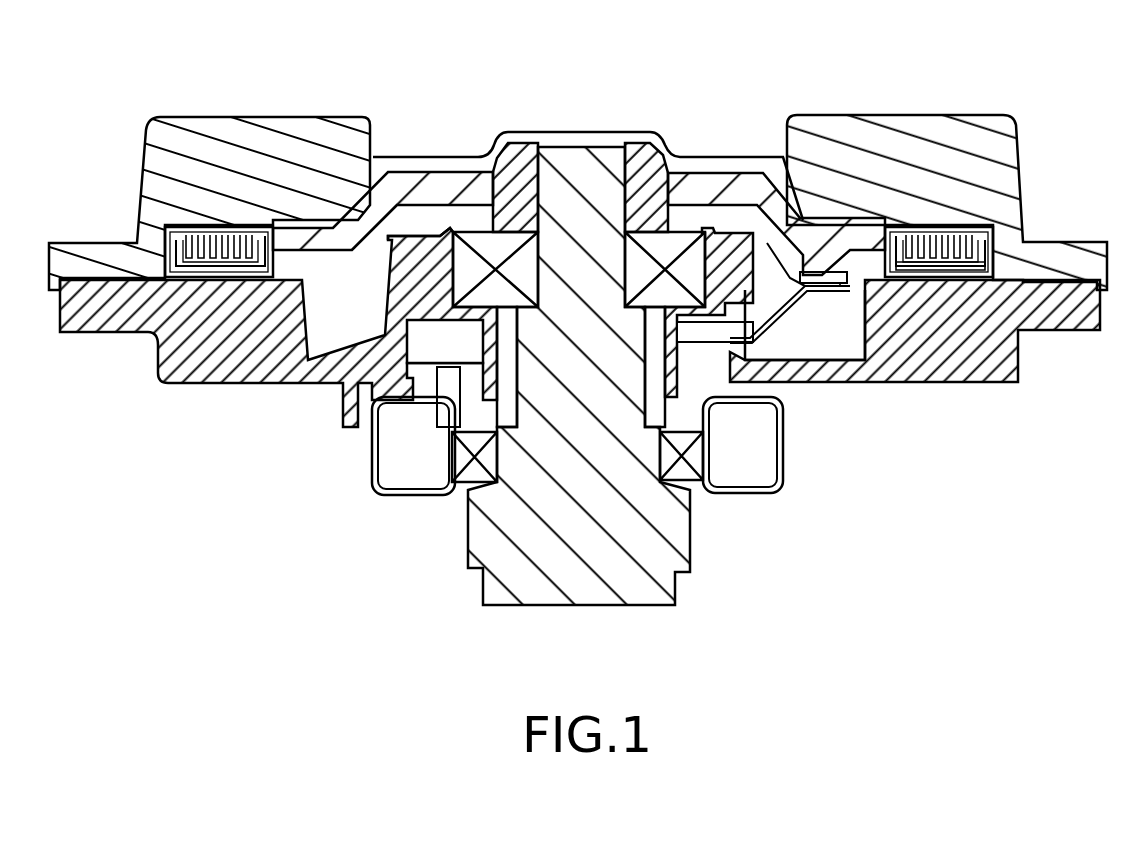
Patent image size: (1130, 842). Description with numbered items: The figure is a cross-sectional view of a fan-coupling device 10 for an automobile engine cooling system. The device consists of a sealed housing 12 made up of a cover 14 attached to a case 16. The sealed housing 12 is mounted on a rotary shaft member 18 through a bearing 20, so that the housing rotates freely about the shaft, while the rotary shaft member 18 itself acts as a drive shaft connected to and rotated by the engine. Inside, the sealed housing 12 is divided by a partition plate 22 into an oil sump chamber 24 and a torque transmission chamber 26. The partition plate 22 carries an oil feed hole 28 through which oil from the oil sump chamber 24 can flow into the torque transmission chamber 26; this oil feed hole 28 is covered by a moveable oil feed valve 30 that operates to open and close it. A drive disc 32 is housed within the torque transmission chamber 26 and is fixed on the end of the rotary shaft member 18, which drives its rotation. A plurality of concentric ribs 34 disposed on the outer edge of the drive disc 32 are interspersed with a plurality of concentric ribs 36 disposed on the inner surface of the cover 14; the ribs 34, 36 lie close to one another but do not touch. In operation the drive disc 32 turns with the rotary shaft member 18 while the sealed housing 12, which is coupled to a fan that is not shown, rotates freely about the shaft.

The fan-coupling device 10 is at (698, 88).
The sealed housing 12 is at (114, 155).
The cover 14 is at (975, 127).
The case 16 is at (178, 350).
The rotary shaft member 18 is at (682, 553).
The bearing 20 is at (487, 240).
The partition plate 22 is at (767, 243).
The oil sump chamber 24 is at (830, 338).
The torque transmission chamber 26 is at (400, 232).
The oil feed hole 28 is at (840, 265).
The oil feed valve 30 is at (773, 323).
The drive disc 32 is at (287, 235).
The concentric ribs 34 is at (958, 257).
The concentric ribs 36 is at (955, 233).